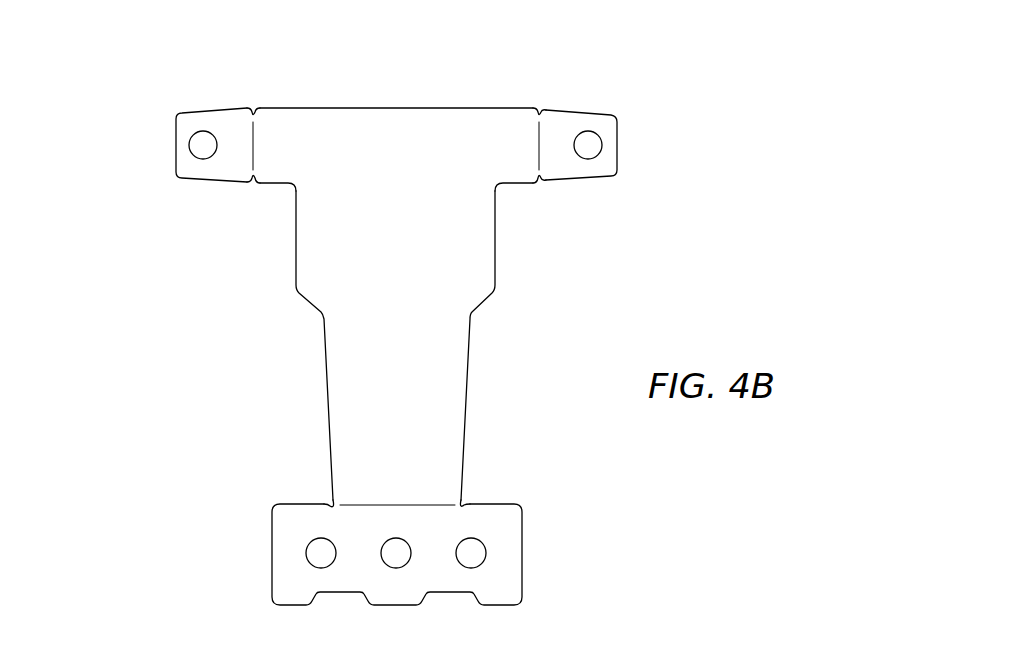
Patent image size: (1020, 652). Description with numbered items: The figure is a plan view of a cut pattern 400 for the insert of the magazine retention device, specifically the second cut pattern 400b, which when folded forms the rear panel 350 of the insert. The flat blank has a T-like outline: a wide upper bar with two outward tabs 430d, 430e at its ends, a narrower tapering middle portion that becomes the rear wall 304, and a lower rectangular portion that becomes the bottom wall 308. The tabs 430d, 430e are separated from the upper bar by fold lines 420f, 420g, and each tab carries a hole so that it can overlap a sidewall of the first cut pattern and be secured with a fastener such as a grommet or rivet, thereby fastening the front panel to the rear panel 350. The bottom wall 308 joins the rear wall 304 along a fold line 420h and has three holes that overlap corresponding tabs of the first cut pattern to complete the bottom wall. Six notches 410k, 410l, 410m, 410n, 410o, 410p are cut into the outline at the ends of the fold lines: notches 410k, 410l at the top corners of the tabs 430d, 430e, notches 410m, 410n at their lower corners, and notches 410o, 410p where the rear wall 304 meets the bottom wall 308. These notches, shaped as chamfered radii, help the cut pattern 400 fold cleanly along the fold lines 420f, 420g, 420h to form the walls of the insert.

The cut pattern 400 is at (637, 63).
The second cut pattern 400b is at (401, 326).
The rear panel 350 is at (186, 87).
The rear wall 304 is at (326, 381).
The bottom wall 308 is at (271, 564).
The notch 410k is at (253, 108).
The notch 410l is at (540, 108).
The notch 410m is at (252, 183).
The notch 410n is at (540, 183).
The notch 410o is at (330, 500).
The notch 410p is at (463, 505).
The fold line 420f is at (257, 145).
The fold line 420g is at (537, 145).
The fold line 420h is at (390, 504).
The tab 430d is at (175, 140).
The tab 430e is at (620, 147).